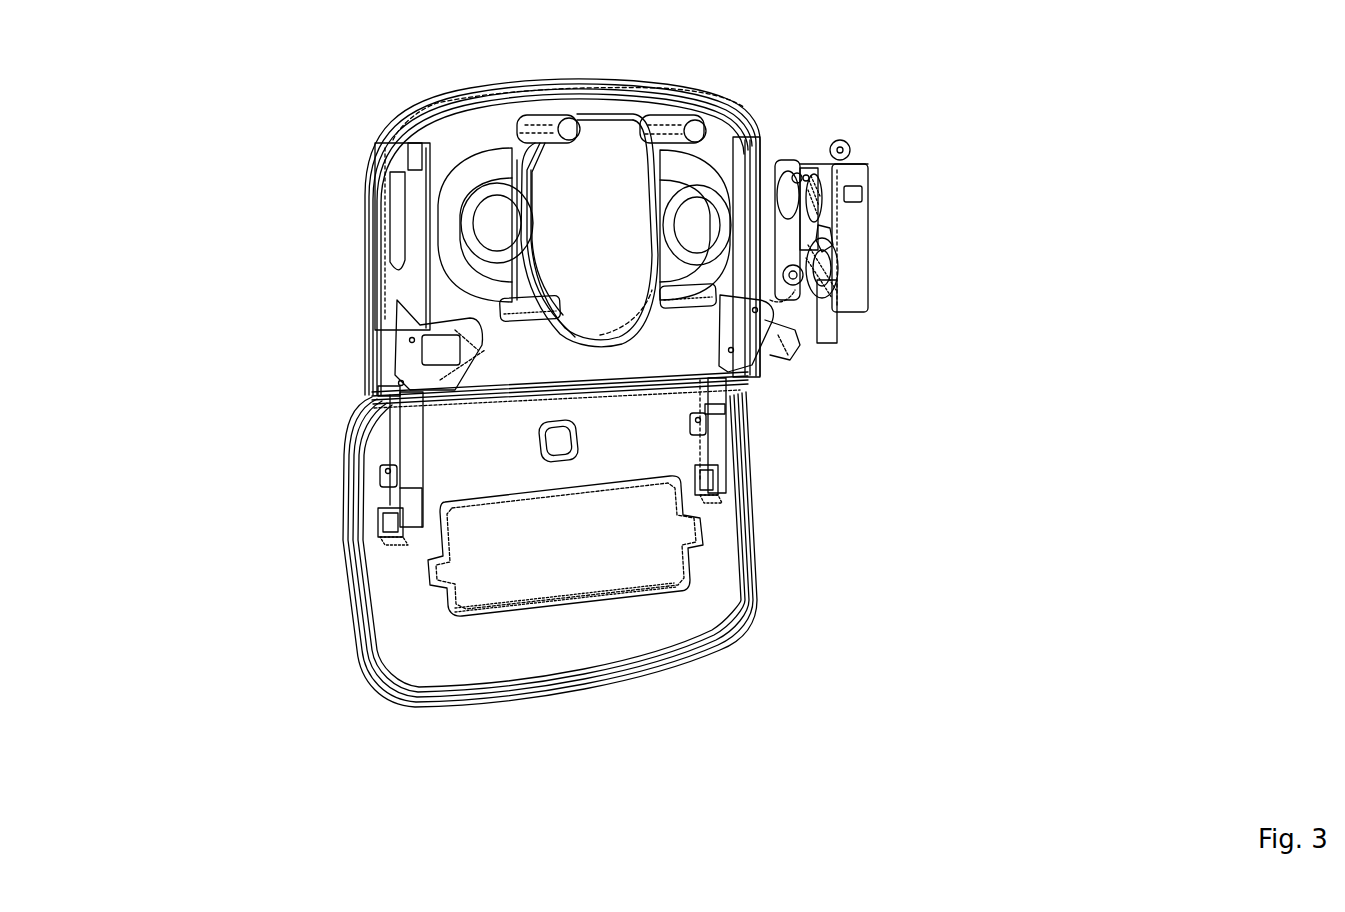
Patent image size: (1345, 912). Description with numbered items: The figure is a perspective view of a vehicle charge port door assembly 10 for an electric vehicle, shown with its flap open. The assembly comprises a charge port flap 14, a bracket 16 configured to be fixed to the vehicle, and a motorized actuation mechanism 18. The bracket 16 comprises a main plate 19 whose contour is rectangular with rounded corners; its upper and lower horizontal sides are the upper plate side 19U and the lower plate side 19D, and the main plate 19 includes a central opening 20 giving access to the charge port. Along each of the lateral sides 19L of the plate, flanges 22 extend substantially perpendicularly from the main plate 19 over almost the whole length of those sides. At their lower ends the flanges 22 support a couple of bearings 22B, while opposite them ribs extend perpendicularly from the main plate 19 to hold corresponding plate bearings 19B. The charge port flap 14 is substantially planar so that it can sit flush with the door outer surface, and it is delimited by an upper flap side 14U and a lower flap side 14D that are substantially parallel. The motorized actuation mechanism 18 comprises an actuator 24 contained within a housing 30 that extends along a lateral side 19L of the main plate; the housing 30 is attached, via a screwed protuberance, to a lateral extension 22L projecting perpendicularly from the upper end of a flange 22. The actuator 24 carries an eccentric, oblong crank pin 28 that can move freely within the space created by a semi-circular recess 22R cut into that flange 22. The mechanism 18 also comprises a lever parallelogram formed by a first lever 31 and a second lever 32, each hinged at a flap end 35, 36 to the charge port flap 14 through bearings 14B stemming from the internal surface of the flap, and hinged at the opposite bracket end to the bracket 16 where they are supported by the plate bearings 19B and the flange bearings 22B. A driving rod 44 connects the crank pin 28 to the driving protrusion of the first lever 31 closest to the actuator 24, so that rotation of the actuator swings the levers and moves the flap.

The vehicle charge port door assembly 10 is at (207, 303).
The charge port flap 14 is at (430, 653).
The upper flap side 14U is at (358, 408).
The bearings 14B is at (381, 477).
The lower flap side 14D is at (467, 714).
The bracket 16 is at (443, 139).
The main plate 19 is at (716, 125).
The upper plate side 19U is at (493, 88).
The lateral sides 19L is at (364, 252).
The plate bearings 19B is at (744, 315).
The lower plate side 19D is at (647, 393).
The central opening 20 is at (587, 163).
The flanges 22 is at (391, 178).
The recess 22R is at (783, 175).
The lateral extension 22L is at (818, 143).
The bearings 22B is at (401, 377).
The actuator 24 is at (877, 200).
The crank pin 28 is at (809, 178).
The housing 30 is at (857, 245).
The first lever 31 is at (376, 387).
The second lever 32 is at (420, 463).
The flap end 35 is at (380, 453).
The flap end 36 is at (398, 541).
The driving rod 44 is at (790, 269).
The motorized actuation mechanism 18 is at (858, 340).